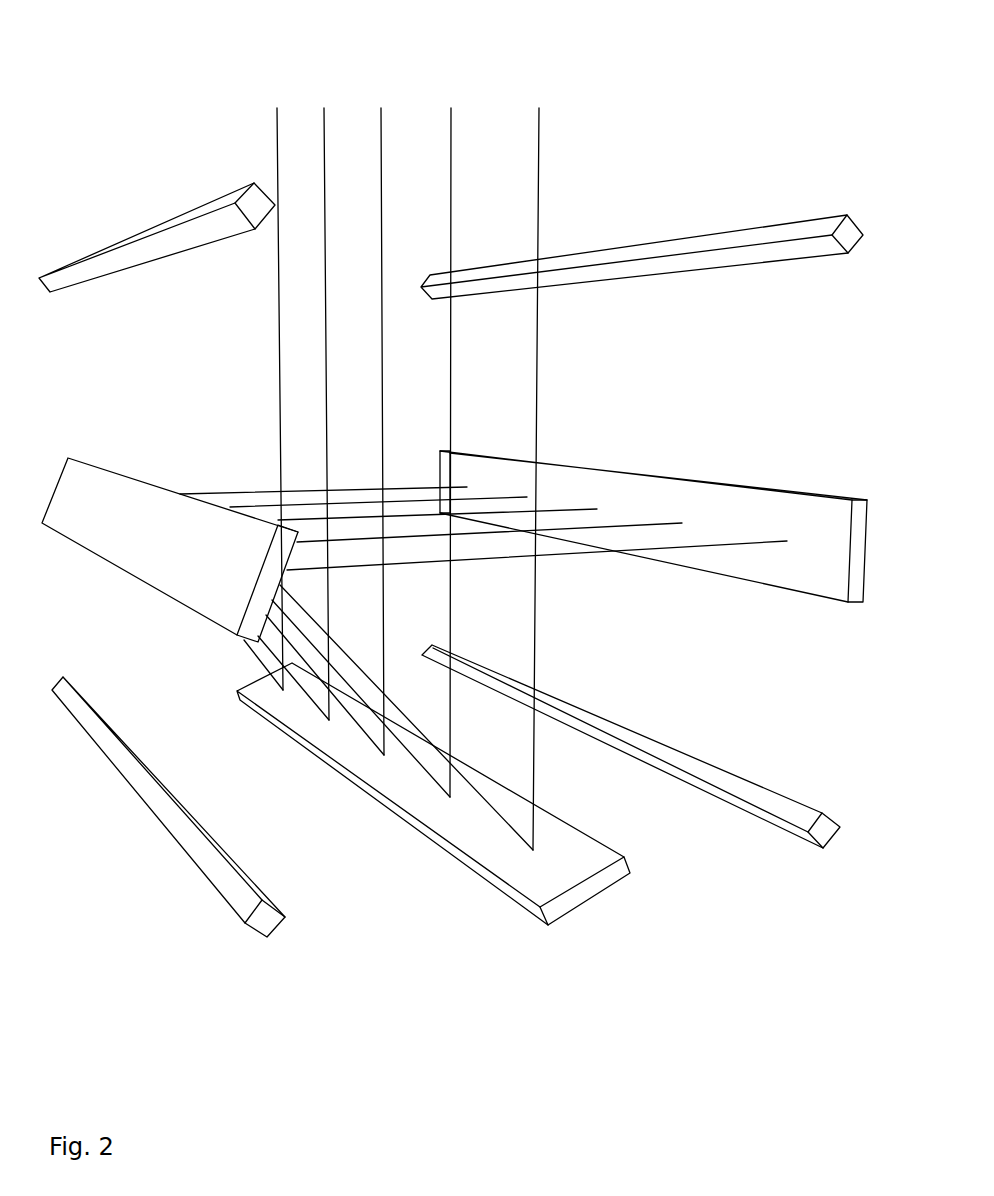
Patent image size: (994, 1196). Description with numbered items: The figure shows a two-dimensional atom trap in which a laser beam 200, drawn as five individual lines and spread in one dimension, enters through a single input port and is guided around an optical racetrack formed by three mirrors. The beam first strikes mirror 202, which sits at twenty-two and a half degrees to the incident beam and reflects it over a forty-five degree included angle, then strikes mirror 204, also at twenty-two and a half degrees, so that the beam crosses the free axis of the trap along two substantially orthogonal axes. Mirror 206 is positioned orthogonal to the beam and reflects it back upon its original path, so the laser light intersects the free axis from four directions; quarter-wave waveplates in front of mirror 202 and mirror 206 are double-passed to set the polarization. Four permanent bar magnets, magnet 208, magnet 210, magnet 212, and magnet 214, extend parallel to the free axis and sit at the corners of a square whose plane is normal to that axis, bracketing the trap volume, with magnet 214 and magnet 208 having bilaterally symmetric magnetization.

The laser beam 200 is at (418, 100).
The mirror 202 is at (593, 903).
The mirror 204 is at (127, 472).
The mirror 206 is at (837, 493).
The magnet 208 is at (797, 222).
The magnet 210 is at (247, 928).
The magnet 212 is at (773, 835).
The magnet 214 is at (127, 232).